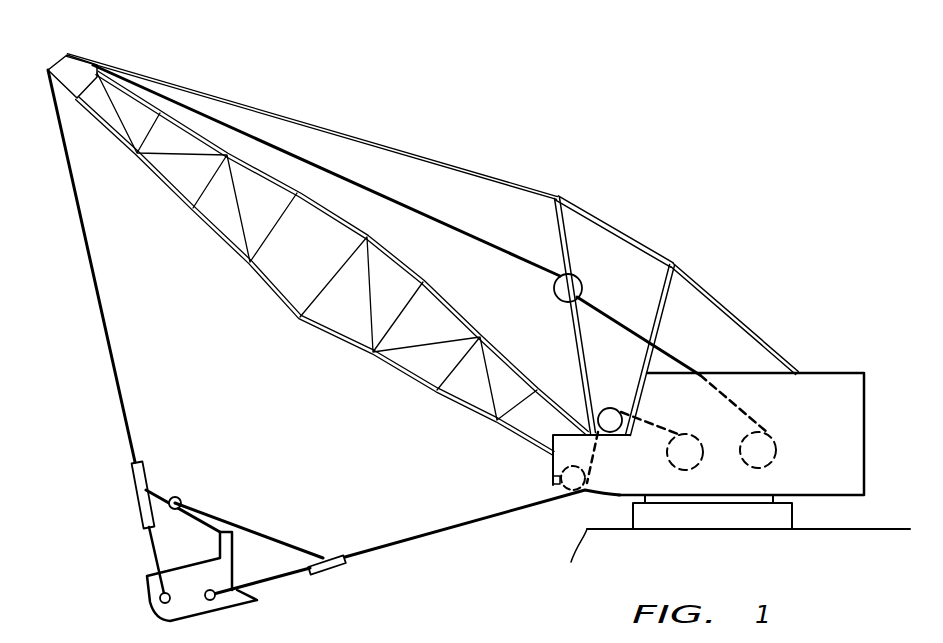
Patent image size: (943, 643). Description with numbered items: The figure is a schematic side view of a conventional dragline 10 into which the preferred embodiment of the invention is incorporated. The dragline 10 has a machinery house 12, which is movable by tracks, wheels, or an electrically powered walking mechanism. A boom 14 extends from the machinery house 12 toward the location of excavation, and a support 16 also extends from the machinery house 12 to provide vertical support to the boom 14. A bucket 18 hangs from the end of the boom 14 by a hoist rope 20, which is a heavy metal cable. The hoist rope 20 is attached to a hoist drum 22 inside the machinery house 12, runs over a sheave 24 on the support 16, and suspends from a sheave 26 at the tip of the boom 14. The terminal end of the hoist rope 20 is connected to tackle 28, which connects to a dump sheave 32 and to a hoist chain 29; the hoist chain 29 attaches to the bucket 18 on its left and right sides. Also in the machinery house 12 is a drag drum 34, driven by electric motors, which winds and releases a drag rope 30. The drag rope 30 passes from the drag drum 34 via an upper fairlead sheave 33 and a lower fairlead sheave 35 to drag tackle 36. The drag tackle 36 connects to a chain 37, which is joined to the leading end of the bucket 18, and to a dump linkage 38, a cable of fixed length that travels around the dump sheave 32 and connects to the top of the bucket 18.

The dragline 10 is at (646, 72).
The machinery house 12 is at (818, 372).
The boom 14 is at (190, 217).
The support 16 is at (468, 170).
The bucket 18 is at (152, 596).
The hoist rope 20 is at (488, 247).
The hoist drum 22 is at (778, 449).
The sheave 24 is at (554, 291).
The sheave 26 is at (50, 58).
The tackle 28 is at (133, 495).
The hoist chain 29 is at (148, 549).
The drag rope 30 is at (450, 526).
The dump sheave 32 is at (175, 496).
The upper fairlead sheave 33 is at (611, 408).
The drag drum 34 is at (704, 462).
The lower fairlead sheave 35 is at (552, 480).
The drag tackle 36 is at (340, 570).
The chain 37 is at (278, 582).
The dump linkage 38 is at (250, 526).